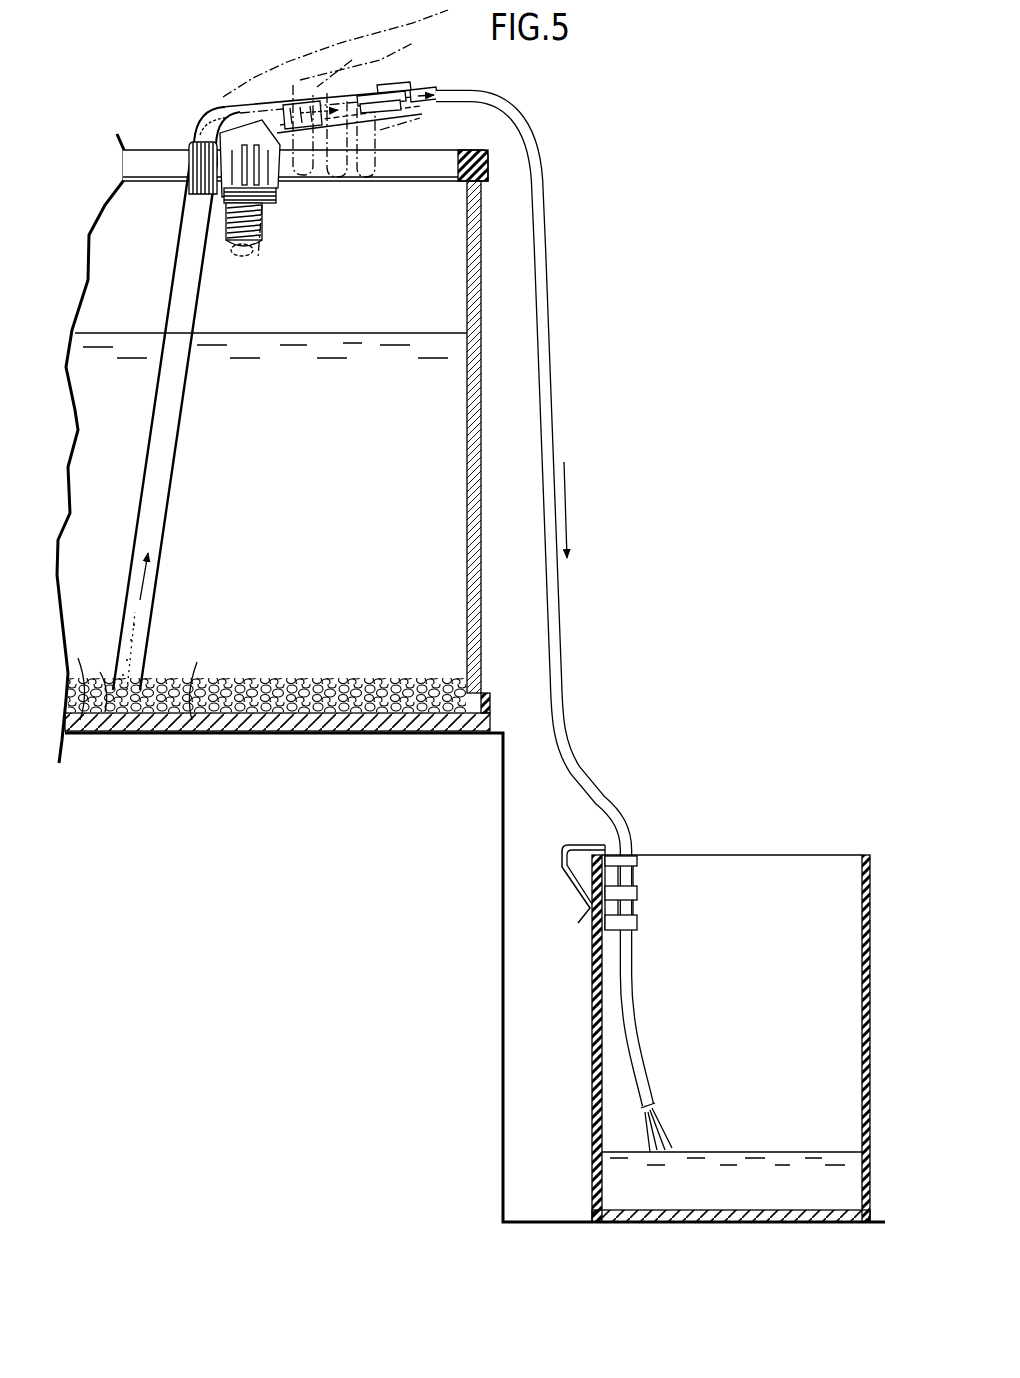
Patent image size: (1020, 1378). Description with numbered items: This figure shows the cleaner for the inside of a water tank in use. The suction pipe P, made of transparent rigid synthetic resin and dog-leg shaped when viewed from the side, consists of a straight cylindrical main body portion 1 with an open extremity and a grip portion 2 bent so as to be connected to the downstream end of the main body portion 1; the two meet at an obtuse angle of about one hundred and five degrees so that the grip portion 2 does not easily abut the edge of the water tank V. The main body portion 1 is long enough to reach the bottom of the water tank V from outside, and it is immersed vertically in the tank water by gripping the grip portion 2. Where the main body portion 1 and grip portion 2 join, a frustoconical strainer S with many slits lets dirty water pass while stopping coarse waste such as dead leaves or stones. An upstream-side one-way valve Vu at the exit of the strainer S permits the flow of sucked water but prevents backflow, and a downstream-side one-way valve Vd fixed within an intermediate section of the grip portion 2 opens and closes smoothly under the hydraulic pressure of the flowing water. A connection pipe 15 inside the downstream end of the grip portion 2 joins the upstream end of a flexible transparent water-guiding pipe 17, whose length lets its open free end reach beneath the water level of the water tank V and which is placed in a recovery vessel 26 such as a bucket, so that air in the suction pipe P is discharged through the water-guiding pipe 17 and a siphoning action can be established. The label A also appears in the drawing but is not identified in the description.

The water tank V is at (158, 145).
The upstream-side one-way valve Vu is at (236, 121).
The downstream-side one-way valve Vd is at (327, 135).
The main body portion 1 is at (268, 350).
The grip portion 2 is at (335, 116).
The suction pipe P is at (187, 397).
The strainer S is at (188, 187).
The attachment A is at (262, 218).
The connection pipe 15 is at (373, 117).
The water-guiding pipe 17 is at (546, 404).
The recovery vessel 26 is at (773, 855).